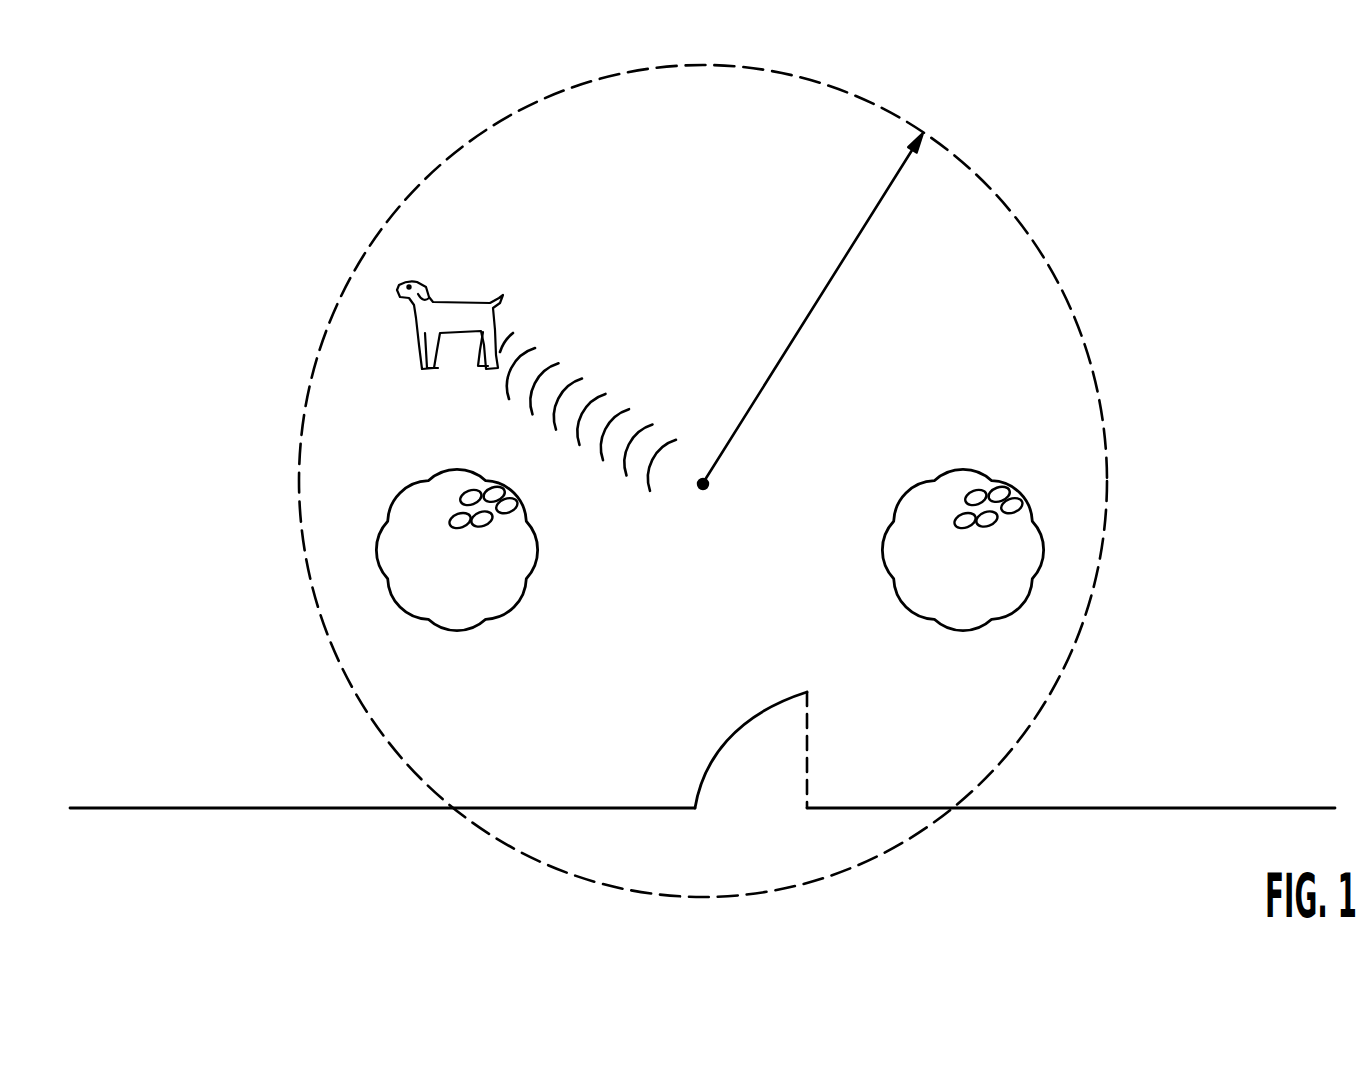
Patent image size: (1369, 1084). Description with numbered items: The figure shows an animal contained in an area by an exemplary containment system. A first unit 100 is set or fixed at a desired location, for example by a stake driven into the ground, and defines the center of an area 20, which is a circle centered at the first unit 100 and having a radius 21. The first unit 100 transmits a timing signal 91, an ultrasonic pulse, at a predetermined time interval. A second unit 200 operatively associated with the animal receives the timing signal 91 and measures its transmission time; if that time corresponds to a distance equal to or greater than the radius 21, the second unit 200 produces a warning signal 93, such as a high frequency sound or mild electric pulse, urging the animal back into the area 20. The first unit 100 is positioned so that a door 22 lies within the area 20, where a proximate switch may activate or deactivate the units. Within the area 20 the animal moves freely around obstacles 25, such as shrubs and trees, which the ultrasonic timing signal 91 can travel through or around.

The area 20 is at (967, 167).
The radius 21 is at (817, 307).
The door 22 is at (808, 745).
The obstacles 25 is at (375, 548).
The timing signal 91 is at (653, 425).
The warning signal 93 is at (424, 292).
The first unit 100 is at (708, 482).
The second unit 200 is at (462, 300).